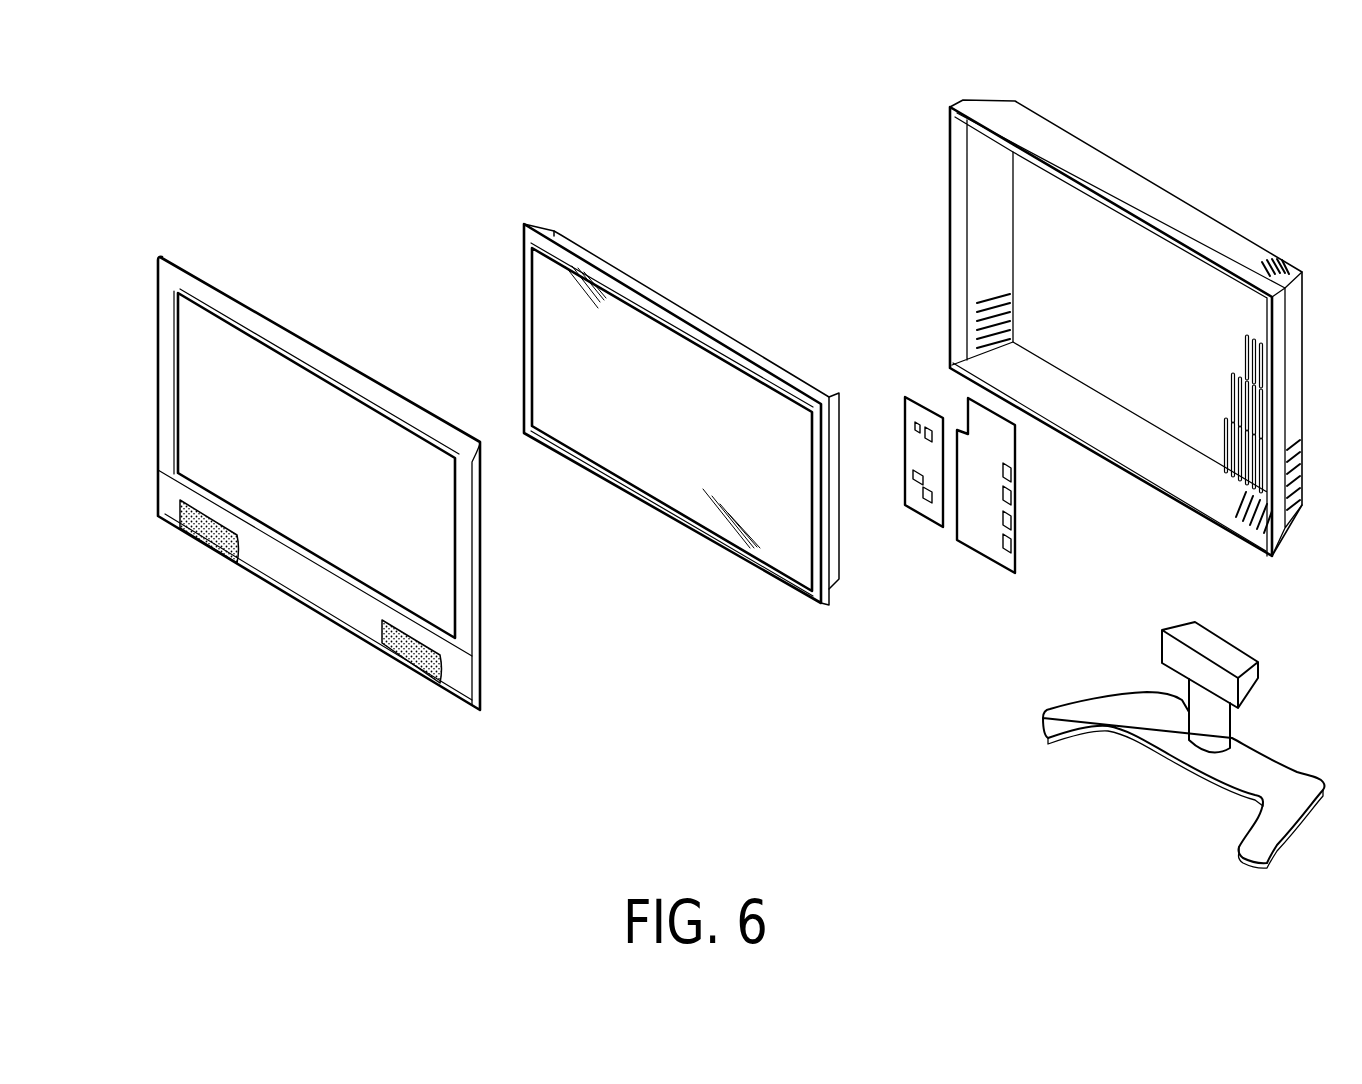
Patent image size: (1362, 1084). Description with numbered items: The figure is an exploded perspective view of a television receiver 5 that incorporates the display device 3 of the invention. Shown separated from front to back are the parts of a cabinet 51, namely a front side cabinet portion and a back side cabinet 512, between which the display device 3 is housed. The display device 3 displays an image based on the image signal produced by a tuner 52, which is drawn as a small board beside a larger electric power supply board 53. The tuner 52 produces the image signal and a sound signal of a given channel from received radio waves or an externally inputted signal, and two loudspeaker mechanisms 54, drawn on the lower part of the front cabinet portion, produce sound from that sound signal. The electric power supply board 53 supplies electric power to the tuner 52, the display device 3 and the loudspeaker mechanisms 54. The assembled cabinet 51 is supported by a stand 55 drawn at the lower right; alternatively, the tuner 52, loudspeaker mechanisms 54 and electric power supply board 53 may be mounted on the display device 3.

The television receiver 5 is at (756, 714).
The display device 3 is at (607, 257).
The cabinet 51 is at (240, 302).
The back side cabinet 512 is at (1064, 128).
The tuner 52 is at (917, 513).
The electric power supply board 53 is at (1018, 501).
The loudspeaker mechanisms 54 is at (187, 537).
The stand 55 is at (1263, 760).